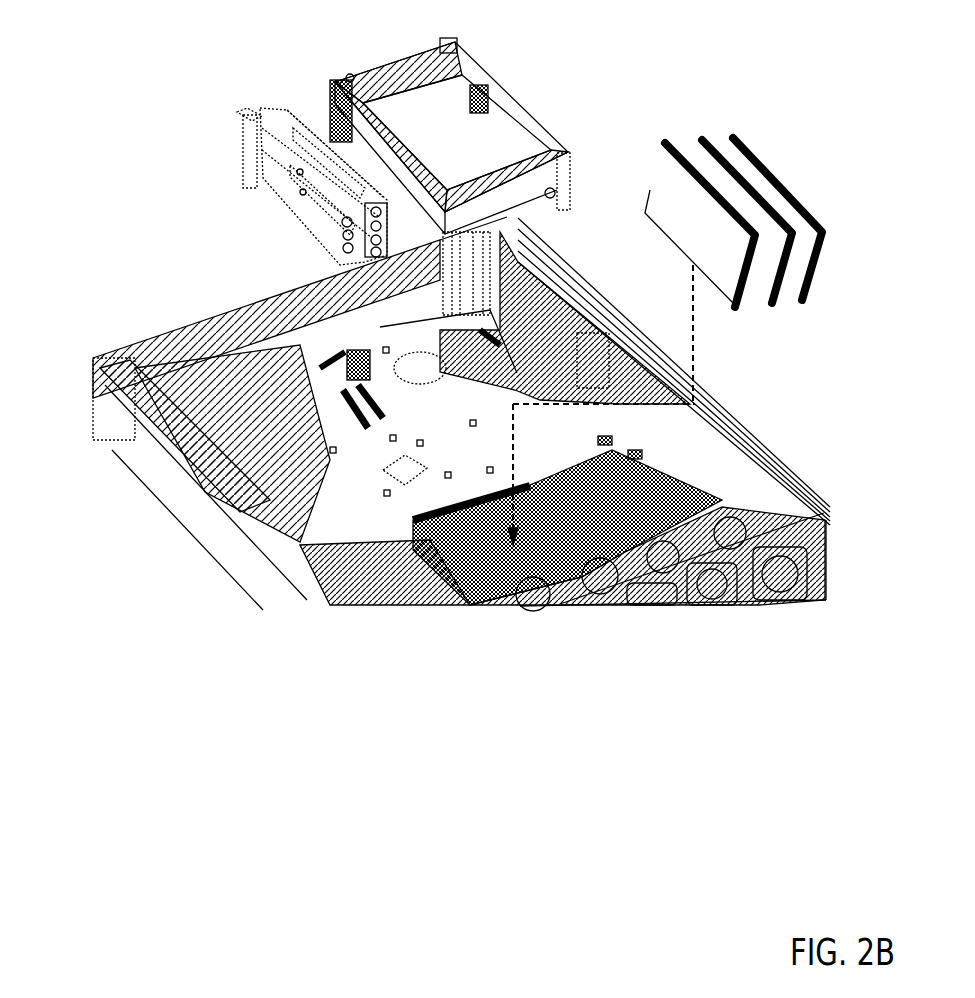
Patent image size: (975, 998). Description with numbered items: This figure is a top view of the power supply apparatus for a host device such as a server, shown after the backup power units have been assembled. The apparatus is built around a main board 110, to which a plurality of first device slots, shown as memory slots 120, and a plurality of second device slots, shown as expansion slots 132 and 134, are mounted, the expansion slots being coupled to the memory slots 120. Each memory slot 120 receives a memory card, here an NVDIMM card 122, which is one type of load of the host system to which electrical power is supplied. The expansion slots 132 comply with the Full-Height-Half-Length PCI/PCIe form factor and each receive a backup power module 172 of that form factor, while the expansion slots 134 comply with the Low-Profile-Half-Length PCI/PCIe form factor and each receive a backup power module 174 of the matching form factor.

The main board 110 is at (327, 507).
The memory slots 120 is at (430, 578).
The NVDIMM card 122 is at (730, 140).
The expansion slots 132 is at (435, 342).
The expansion slots 134 is at (345, 416).
The backup power module 172 is at (380, 70).
The backup power module 174 is at (247, 118).